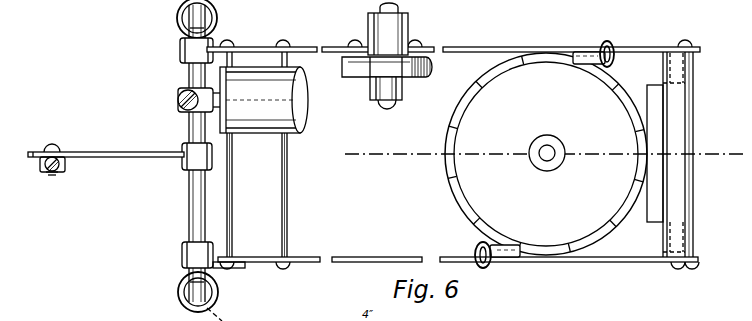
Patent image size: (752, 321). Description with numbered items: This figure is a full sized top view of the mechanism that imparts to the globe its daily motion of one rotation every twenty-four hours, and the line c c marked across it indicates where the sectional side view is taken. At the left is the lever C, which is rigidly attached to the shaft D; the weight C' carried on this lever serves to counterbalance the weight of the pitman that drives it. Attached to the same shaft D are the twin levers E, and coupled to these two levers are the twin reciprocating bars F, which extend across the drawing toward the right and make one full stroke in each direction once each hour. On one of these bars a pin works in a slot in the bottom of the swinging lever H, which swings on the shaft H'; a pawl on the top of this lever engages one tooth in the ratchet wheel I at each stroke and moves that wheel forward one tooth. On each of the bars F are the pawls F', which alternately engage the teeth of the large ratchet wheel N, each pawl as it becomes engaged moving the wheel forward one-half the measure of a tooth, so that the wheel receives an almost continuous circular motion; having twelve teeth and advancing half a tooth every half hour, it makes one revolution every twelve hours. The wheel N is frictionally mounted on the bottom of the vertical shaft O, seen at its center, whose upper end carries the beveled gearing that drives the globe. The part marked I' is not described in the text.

The lever C is at (106, 153).
The weight C' is at (274, 100).
The shaft D is at (190, 200).
The twin levers E is at (240, 43).
The reciprocating bars F is at (453, 145).
The pawls F' is at (544, 152).
The swinging lever H is at (370, 66).
The shaft H' is at (370, 29).
The ratchet wheel I is at (420, 78).
The lower cylinder I' is at (370, 93).
The ratchet wheel N is at (546, 154).
The vertical shaft O is at (546, 151).
The section line c is at (542, 160).